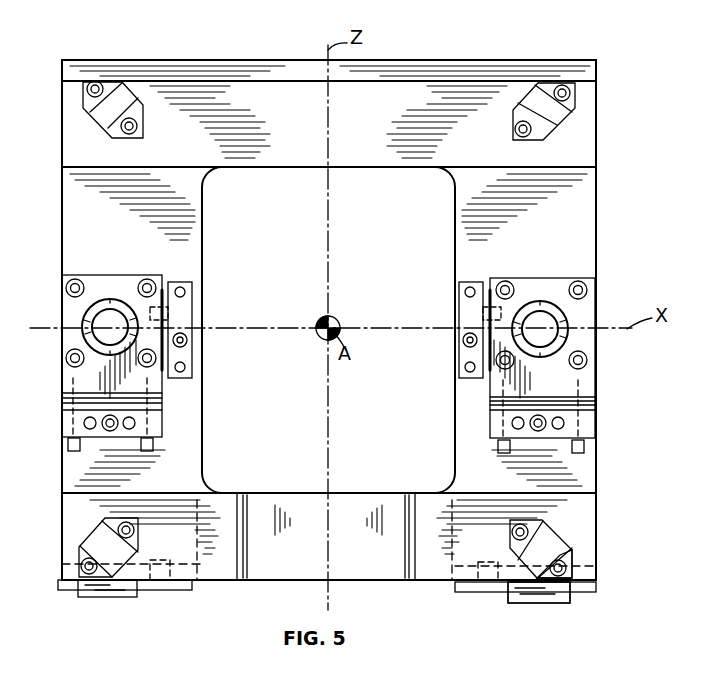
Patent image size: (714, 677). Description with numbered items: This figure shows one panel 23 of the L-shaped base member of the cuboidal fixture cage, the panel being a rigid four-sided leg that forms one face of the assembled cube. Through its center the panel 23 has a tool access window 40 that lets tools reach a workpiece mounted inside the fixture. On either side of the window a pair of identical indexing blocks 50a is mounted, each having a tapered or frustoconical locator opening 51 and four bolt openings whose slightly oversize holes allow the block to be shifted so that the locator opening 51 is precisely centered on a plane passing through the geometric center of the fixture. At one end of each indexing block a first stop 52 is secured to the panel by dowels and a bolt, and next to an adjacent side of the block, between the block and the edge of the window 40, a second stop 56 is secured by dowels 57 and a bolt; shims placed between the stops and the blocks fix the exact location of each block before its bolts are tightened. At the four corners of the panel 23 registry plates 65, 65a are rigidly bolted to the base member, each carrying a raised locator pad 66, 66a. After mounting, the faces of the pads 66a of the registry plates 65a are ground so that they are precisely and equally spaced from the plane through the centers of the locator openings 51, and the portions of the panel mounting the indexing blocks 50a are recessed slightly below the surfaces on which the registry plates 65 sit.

The panel 23 is at (600, 187).
The tool access window 40 is at (210, 262).
The indexing blocks 50a is at (92, 278).
The locator opening 51 is at (100, 312).
The first stop 52 is at (97, 440).
The second stop 56 is at (187, 358).
The dowels 57 is at (566, 320).
The registry plate 65 is at (568, 553).
The registry plates 65a is at (575, 98).
The locator pad 66 is at (553, 535).
The pads 66a is at (553, 122).